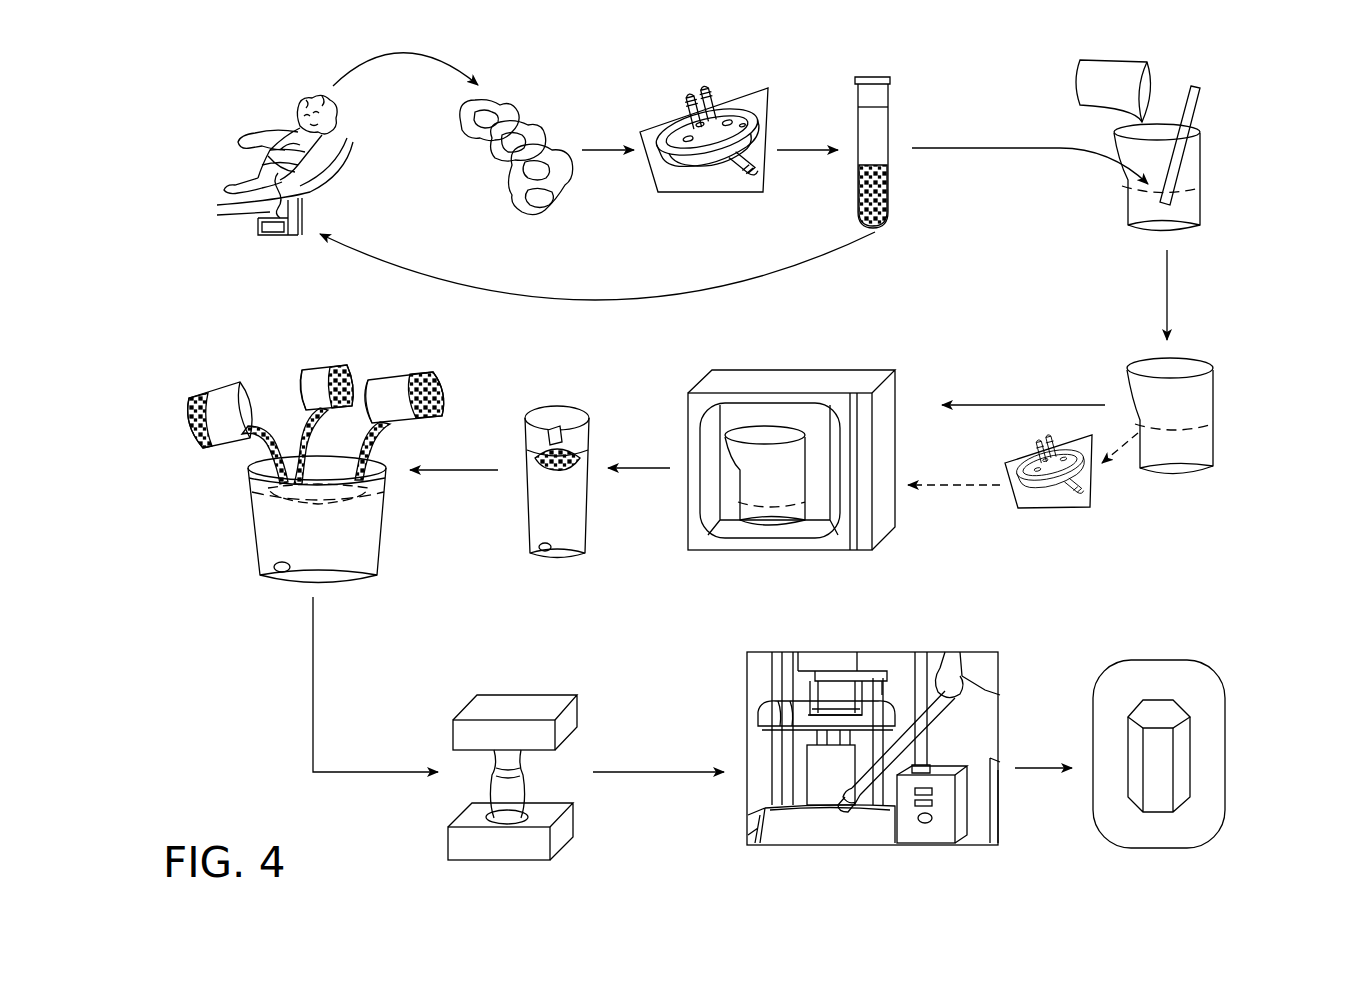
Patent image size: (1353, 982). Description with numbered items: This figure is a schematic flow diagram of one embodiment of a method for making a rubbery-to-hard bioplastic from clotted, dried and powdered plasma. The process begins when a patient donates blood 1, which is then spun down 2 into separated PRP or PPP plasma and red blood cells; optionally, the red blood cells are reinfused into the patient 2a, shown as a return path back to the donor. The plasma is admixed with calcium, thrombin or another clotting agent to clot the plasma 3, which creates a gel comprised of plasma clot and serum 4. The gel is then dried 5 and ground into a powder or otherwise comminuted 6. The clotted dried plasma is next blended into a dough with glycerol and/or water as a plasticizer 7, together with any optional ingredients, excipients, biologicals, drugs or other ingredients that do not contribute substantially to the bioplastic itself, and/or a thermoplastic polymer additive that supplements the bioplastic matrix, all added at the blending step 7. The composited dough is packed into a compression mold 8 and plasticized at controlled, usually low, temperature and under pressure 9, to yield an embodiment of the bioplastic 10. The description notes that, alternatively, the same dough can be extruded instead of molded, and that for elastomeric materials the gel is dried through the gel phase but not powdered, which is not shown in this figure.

The blood donation 1 is at (317, 165).
The spinning down 2 is at (672, 113).
The reinfusion of red blood cells 2a is at (667, 298).
The clotting of plasma 3 is at (1202, 193).
The gel of plasma clot and serum 4 is at (1093, 490).
The drying of gel 5 is at (818, 378).
The grinding into powder 6 is at (590, 437).
The blending into dough 7 is at (258, 548).
The compression mold 8 is at (487, 700).
The plasticizing under temperature and pressure 9 is at (747, 697).
The bioplastic 10 is at (1227, 688).